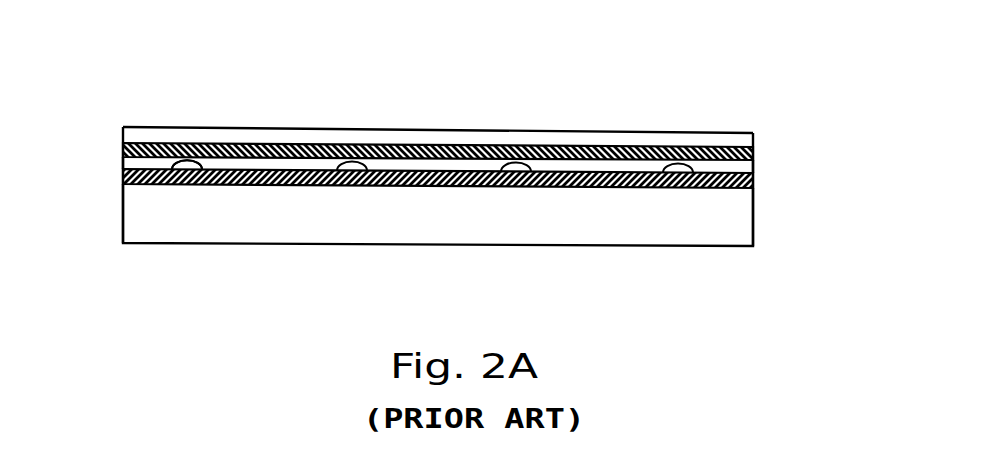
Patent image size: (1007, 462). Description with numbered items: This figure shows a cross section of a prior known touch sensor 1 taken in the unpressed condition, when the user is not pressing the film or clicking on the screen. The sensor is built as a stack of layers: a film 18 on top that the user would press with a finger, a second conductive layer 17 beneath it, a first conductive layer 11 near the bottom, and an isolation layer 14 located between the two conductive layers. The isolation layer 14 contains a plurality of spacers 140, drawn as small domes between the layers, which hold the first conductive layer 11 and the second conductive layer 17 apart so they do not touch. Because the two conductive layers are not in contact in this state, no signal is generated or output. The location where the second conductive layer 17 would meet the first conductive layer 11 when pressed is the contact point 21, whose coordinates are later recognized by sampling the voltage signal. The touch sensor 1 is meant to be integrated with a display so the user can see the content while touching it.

The touch sensor 1 is at (430, 115).
The first conductive layer 11 is at (753, 190).
The isolation layer 14 is at (141, 159).
The spacers 140 is at (184, 157).
The second conductive layer 17 is at (753, 152).
The film 18 is at (630, 140).
The contact point 21 is at (187, 163).